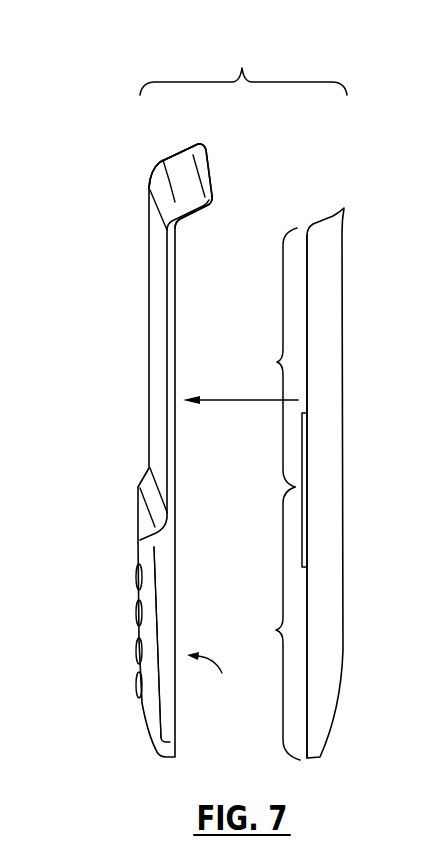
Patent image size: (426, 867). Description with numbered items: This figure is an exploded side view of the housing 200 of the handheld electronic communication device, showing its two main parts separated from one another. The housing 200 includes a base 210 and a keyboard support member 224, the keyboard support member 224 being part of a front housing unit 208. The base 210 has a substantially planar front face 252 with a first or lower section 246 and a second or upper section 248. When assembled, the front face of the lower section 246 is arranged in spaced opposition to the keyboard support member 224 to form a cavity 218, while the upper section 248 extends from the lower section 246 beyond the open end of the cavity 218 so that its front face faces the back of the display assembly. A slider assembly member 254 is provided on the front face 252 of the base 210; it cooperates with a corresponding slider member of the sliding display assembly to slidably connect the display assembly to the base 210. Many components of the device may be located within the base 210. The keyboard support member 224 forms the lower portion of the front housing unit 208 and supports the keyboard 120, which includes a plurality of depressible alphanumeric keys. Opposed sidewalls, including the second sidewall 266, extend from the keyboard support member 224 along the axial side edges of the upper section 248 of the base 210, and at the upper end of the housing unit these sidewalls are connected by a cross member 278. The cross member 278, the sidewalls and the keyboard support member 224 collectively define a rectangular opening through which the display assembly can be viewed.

The housing 200 is at (243, 67).
The front housing unit 208 is at (162, 173).
The cross member 278 is at (188, 176).
The second sidewall 266 is at (156, 323).
The front face 252 is at (296, 278).
The base 210 is at (342, 296).
The upper section 248 is at (240, 357).
The slider assembly member 254 is at (302, 461).
The keyboard 120 is at (140, 622).
The keyboard support member 224 is at (160, 655).
The cavity 218 is at (216, 680).
The lower section 246 is at (262, 623).